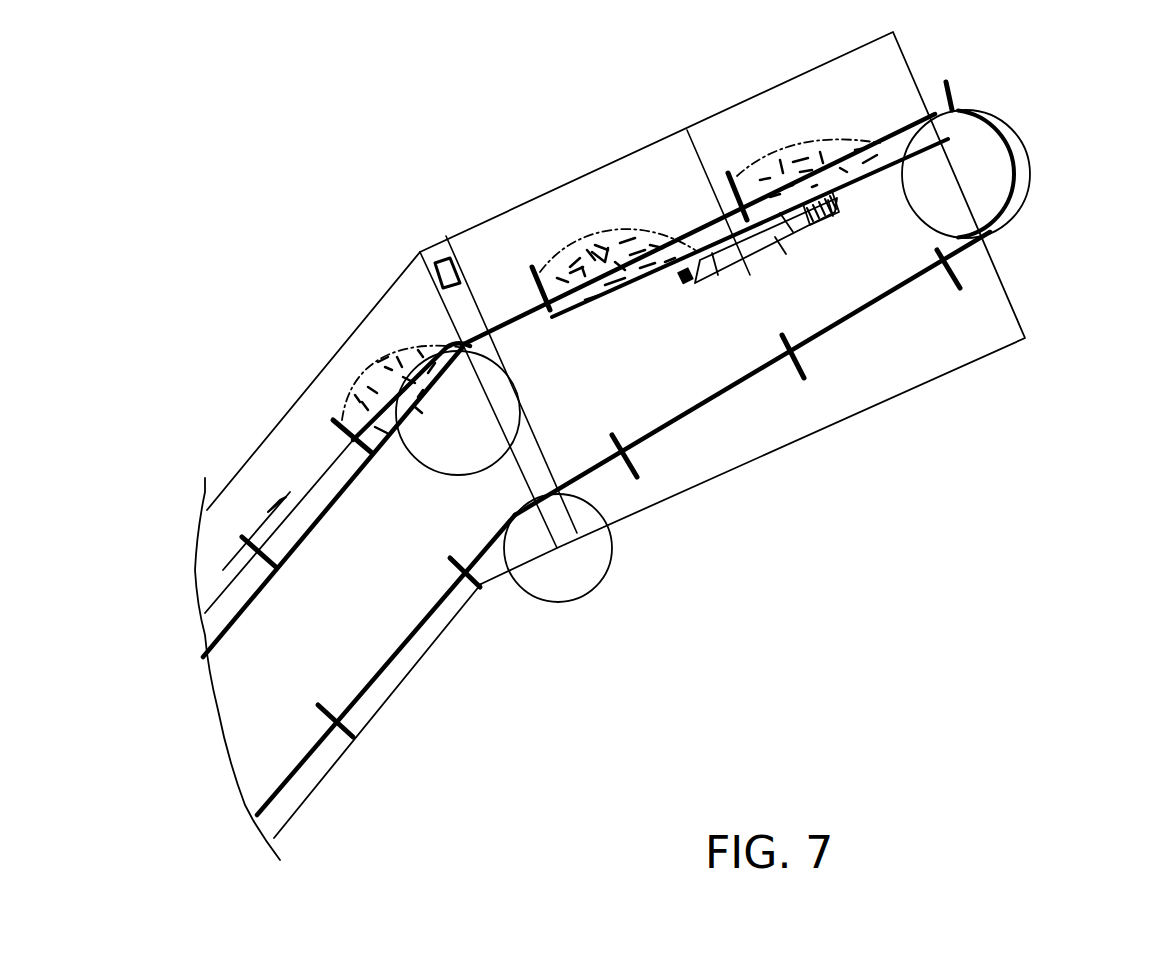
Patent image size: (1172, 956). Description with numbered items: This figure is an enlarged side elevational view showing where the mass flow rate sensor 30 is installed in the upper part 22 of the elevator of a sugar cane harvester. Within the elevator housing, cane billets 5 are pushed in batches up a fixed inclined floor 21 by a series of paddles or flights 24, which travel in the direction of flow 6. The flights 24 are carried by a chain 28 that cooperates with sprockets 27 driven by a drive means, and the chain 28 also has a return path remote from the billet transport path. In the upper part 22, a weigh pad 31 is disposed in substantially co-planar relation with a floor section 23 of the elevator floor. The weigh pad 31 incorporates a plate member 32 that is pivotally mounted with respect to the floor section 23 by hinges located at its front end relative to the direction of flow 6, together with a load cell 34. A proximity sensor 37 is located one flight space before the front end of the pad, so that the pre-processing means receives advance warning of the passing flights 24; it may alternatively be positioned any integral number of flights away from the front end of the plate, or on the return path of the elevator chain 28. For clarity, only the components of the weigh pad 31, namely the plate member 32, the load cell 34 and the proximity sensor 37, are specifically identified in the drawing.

The cane billets 5 is at (790, 148).
The direction of flow 6 is at (238, 553).
The fixed inclined floor 21 is at (322, 527).
The upper part of the elevator 22 is at (858, 393).
The floor section 23 is at (621, 288).
The flights 24 is at (540, 297).
The sprockets 27 is at (993, 178).
The chain 28 is at (520, 317).
The mass flow rate sensor 30 is at (775, 253).
The weigh pad 31 is at (752, 247).
The plate member 32 is at (678, 220).
The load cell 34 is at (828, 223).
The proximity sensor 37 is at (437, 265).